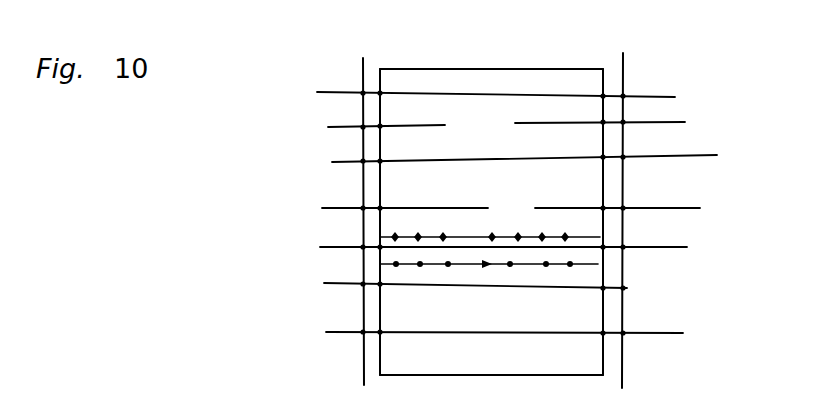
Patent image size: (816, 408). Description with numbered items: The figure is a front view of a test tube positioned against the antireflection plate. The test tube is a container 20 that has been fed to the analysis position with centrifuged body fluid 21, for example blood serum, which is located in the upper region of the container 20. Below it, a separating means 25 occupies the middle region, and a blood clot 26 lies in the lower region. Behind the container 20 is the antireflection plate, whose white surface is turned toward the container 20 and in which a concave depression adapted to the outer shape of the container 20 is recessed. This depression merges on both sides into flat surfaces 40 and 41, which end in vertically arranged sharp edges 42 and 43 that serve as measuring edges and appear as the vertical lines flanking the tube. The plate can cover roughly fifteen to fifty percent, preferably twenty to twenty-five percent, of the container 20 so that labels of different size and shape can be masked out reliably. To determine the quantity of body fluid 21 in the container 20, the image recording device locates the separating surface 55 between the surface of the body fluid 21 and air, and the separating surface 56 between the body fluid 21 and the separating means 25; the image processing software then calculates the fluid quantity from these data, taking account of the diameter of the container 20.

The container 20 is at (626, 96).
The body fluid 21 is at (498, 135).
The separating means 25 is at (466, 244).
The blood clot 26 is at (491, 321).
The flat surface 40 is at (376, 288).
The flat surface 41 is at (642, 287).
The sharp edge 42 is at (362, 186).
The sharp edge 43 is at (627, 183).
The separating surface 55 is at (420, 70).
The separating surface 56 is at (578, 238).